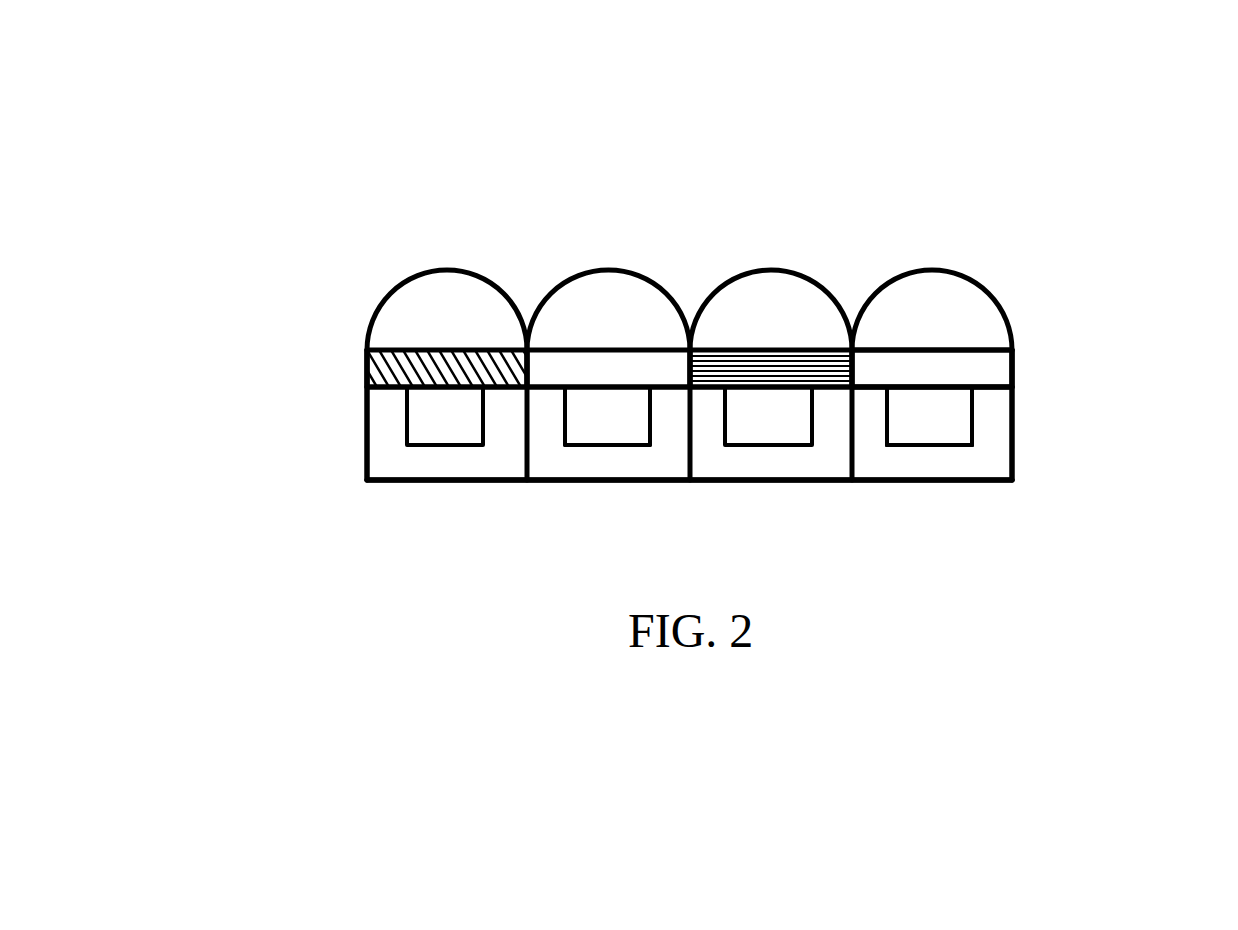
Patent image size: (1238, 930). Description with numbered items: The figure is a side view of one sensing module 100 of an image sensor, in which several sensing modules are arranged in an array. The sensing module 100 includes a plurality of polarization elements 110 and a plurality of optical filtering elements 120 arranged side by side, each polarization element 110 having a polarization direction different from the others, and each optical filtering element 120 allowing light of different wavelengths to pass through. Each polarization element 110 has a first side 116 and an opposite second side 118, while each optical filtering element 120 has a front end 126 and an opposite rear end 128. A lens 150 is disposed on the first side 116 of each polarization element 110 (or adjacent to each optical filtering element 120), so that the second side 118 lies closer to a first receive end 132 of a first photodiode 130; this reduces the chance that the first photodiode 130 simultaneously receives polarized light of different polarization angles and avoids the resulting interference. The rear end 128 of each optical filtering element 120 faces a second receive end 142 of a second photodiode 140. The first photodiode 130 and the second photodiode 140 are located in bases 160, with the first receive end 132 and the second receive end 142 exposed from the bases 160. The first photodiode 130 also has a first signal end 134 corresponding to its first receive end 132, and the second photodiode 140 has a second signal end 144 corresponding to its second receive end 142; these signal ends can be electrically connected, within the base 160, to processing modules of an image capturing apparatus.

The sensing module 100 is at (286, 140).
The polarization element 110 is at (242, 345).
The first side 116 is at (372, 356).
The second side 118 is at (368, 380).
The optical filtering element 120 is at (612, 366).
The front end 126 is at (982, 355).
The rear end 128 is at (960, 381).
The first photodiode 130 is at (242, 430).
The first receive end 132 is at (455, 392).
The first signal end 134 is at (430, 447).
The second photodiode 140 is at (1123, 387).
The second receive end 142 is at (938, 389).
The second signal end 144 is at (957, 447).
The lens 150 is at (972, 300).
The base 160 is at (990, 470).